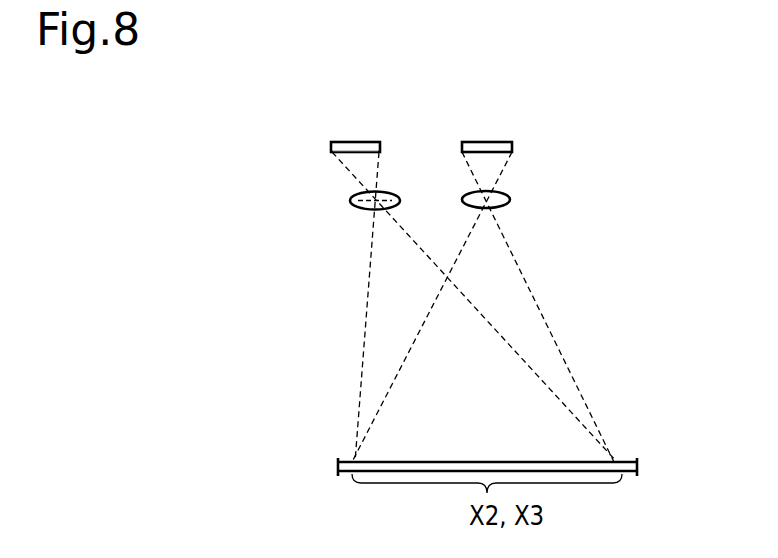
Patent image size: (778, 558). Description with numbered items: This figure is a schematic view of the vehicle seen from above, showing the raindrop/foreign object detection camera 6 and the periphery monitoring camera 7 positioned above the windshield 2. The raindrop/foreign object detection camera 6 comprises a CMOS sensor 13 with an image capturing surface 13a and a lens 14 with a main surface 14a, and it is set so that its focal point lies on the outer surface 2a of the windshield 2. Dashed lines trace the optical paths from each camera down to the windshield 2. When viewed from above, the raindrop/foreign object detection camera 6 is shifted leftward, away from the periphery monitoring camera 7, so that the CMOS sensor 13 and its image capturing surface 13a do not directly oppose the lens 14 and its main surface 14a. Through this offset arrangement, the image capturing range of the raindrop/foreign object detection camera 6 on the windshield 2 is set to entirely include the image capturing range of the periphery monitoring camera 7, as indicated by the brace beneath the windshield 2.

The windshield 2 is at (344, 473).
The outer surface 2a is at (627, 473).
The raindrop/foreign object detection camera 6 is at (308, 140).
The periphery monitoring camera 7 is at (525, 185).
The CMOS sensor 13 is at (355, 142).
The image capturing surface 13a is at (355, 152).
The lens 14 is at (393, 192).
The main surface 14a is at (361, 201).